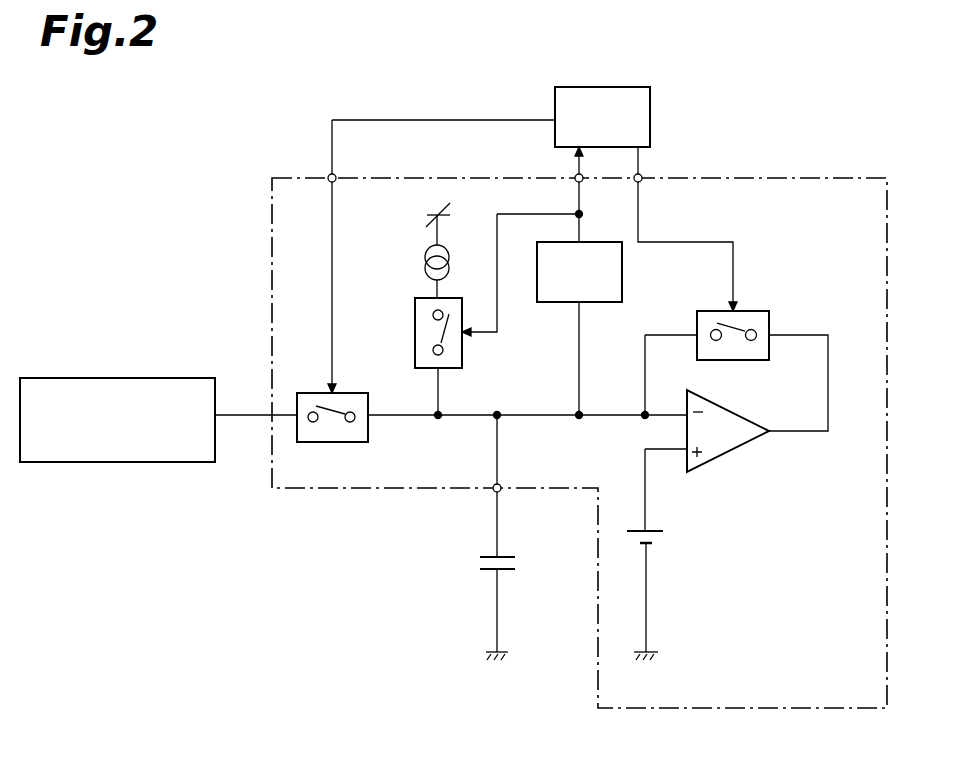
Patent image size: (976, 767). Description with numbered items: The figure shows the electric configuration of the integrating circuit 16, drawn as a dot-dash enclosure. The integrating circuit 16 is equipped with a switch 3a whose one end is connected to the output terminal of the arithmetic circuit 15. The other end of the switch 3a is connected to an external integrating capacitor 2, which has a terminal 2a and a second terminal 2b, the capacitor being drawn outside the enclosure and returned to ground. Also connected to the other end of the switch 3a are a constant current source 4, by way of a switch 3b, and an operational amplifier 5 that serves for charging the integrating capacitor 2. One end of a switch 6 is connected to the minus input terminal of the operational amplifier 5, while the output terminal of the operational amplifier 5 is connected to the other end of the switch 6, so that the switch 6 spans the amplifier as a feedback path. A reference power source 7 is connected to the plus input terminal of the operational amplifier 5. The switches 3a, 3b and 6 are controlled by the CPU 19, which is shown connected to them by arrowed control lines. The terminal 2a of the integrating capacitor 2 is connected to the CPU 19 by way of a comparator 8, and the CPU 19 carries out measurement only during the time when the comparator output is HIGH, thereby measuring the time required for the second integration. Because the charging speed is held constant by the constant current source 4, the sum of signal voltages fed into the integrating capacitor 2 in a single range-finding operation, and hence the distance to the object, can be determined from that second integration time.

The integrating capacitor 2 is at (505, 584).
The terminal of the integrating capacitor 2a is at (498, 556).
The second electrode of capacitor 2b is at (490, 573).
The switch 3a is at (368, 435).
The switch 3b is at (415, 330).
The constant current source 4 is at (426, 256).
The operational amplifier 5 is at (740, 450).
The switch 6 is at (760, 311).
The reference power source 7 is at (664, 538).
The comparator 8 is at (553, 302).
The arithmetic circuit 15 is at (180, 378).
The integrating circuit 16 is at (803, 175).
The CPU 19 is at (651, 117).